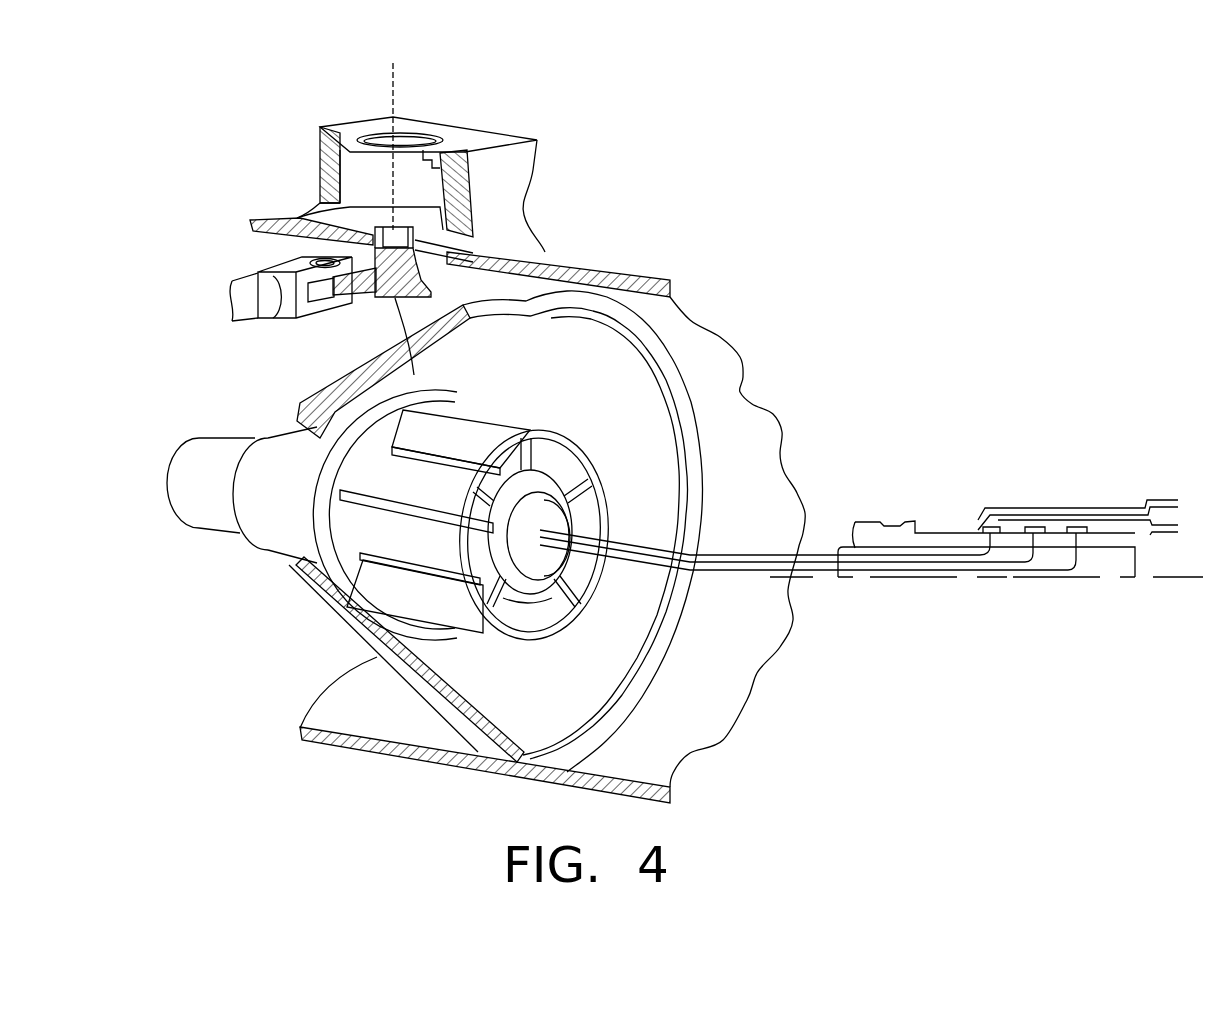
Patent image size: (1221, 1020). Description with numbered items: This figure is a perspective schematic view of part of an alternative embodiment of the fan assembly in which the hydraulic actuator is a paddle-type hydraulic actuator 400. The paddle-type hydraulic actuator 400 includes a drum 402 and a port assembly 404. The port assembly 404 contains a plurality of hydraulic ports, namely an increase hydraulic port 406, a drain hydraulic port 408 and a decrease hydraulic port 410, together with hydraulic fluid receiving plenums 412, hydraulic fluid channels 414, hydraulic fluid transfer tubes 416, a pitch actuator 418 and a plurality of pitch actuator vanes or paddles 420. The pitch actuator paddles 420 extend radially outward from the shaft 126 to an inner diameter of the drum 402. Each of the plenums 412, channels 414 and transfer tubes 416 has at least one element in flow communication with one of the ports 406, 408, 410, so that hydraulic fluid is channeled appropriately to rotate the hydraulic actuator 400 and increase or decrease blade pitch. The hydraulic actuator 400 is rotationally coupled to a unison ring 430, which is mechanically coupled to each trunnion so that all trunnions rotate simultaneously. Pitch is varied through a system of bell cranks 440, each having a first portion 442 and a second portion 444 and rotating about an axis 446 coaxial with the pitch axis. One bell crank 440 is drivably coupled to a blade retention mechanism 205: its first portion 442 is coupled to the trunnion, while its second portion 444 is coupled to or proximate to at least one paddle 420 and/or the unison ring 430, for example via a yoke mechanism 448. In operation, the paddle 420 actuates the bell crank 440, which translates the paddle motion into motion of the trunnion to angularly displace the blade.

The blade retention mechanism 205 is at (336, 108).
The paddle-type hydraulic actuator 400 is at (466, 130).
The axis 446 is at (392, 216).
The second portion 444 is at (290, 268).
The yoke mechanism 448 is at (222, 303).
The bell crank 440 is at (452, 290).
The first portion 442 is at (360, 300).
The unison ring 430 is at (330, 393).
The hydraulic fluid channel 414 is at (467, 432).
The pitch actuator paddle 420 is at (490, 415).
The drum 402 is at (295, 446).
The port assembly 404 is at (892, 458).
The increase hydraulic port 406 is at (988, 510).
The drain hydraulic port 408 is at (1035, 510).
The decrease hydraulic port 410 is at (1078, 510).
The shaft 126 is at (213, 506).
The pitch actuator 418 is at (288, 548).
The hydraulic fluid transfer tube 416 is at (450, 612).
The hydraulic fluid receiving plenum 412 is at (616, 585).